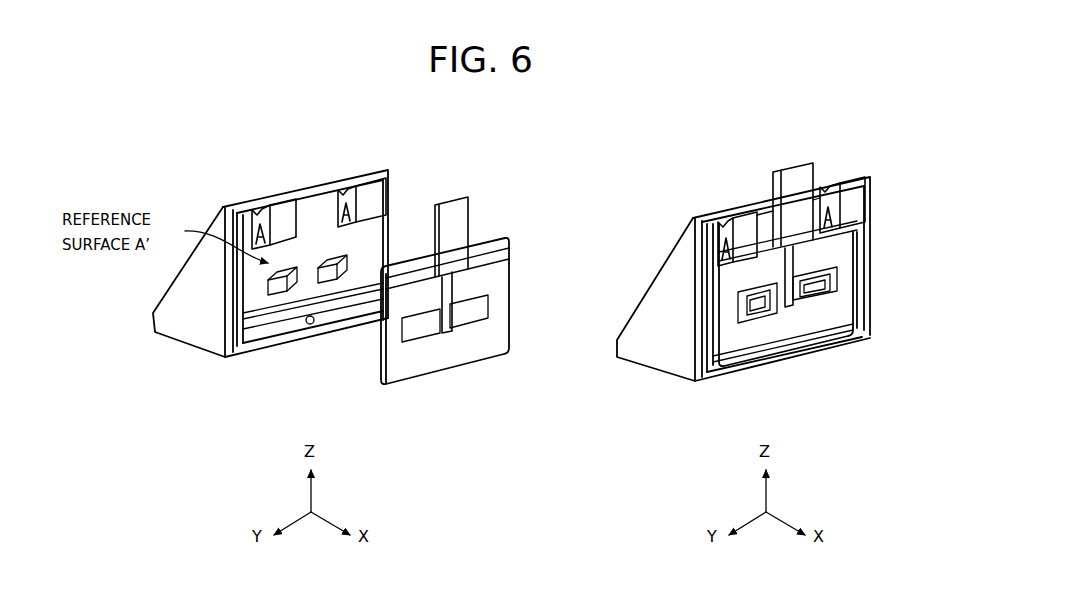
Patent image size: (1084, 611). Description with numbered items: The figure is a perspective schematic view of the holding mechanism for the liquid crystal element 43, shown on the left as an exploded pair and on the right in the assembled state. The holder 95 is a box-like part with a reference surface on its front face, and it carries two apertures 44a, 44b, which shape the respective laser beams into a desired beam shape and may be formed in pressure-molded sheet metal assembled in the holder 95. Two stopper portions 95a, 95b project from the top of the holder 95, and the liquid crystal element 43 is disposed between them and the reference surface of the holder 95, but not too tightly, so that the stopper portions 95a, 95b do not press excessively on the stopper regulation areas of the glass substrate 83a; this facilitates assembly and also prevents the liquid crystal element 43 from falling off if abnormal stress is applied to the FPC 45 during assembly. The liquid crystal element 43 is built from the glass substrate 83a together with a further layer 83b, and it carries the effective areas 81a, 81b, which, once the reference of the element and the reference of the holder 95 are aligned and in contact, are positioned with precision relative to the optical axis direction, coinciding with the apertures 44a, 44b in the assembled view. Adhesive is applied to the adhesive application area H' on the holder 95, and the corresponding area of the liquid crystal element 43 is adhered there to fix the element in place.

The liquid crystal element 43 is at (851, 303).
The aperture 44a is at (263, 288).
The aperture 44b is at (353, 262).
The FPC 45 is at (458, 213).
The effective area 81a is at (419, 331).
The effective area 81b is at (473, 316).
The glass substrate 83a is at (500, 320).
The folded top portion of bracket 83b is at (504, 248).
The holder 95 is at (733, 157).
The stopper portion 95a is at (284, 213).
The stopper portion 95b is at (371, 193).
The adhesive application area H' is at (319, 351).